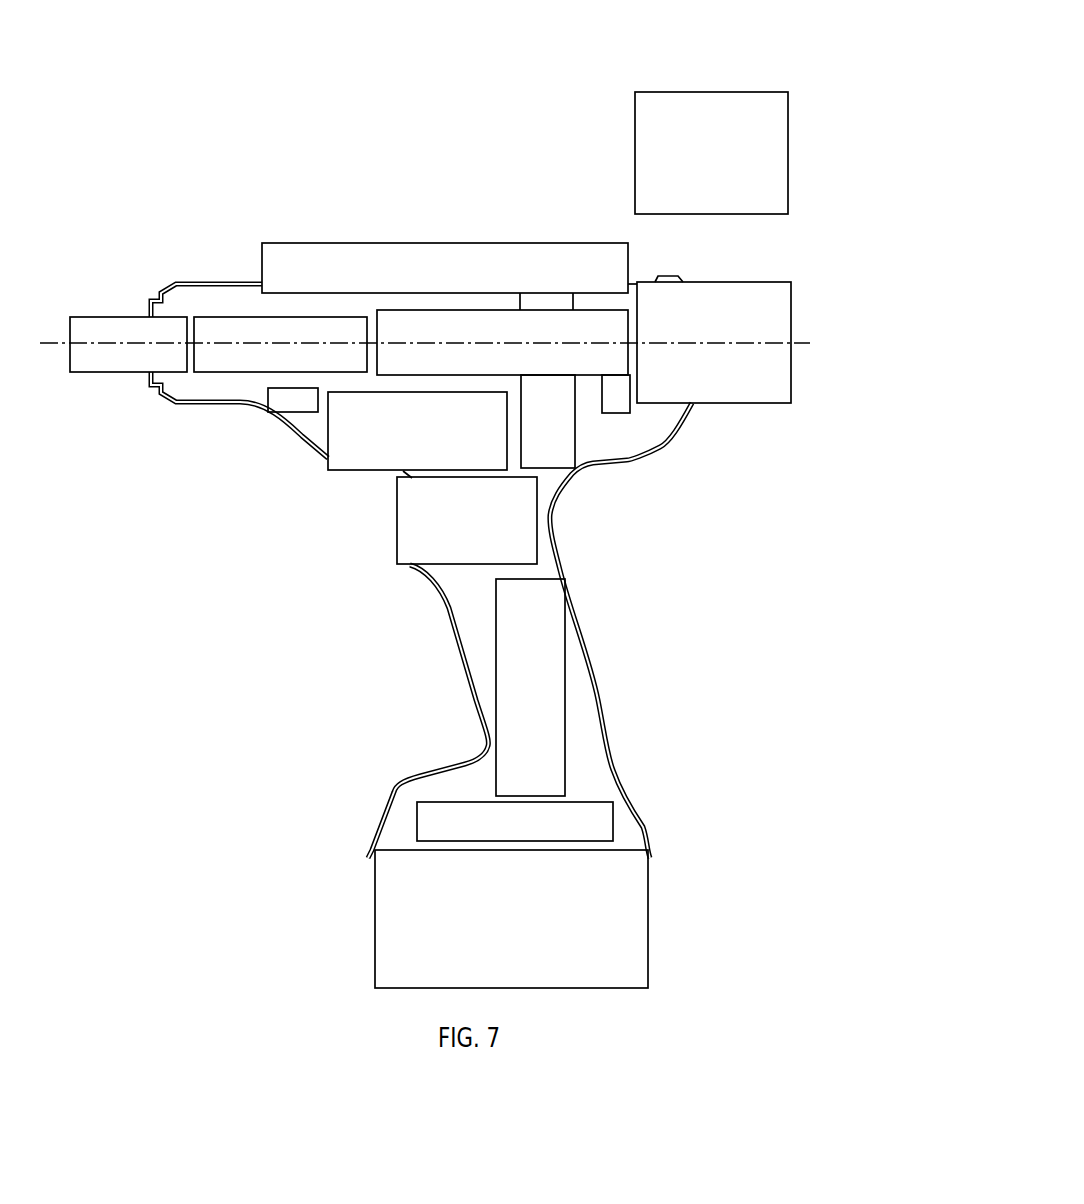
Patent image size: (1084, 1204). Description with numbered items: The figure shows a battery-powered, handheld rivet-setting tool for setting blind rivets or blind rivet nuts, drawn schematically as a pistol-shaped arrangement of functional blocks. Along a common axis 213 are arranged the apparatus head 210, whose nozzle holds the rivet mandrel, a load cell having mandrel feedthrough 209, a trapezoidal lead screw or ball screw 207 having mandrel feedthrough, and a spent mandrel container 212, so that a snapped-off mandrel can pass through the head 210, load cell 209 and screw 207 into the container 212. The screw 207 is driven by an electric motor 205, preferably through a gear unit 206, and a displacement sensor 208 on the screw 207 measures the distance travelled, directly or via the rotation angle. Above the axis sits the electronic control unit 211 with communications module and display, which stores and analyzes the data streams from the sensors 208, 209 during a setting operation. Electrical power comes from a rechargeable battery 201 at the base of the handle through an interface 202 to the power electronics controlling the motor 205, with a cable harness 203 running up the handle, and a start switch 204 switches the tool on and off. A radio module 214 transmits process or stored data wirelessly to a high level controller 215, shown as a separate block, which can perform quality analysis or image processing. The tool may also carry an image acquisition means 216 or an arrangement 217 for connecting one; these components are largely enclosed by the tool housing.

The rechargeable battery 201 is at (617, 928).
The interface between rechargeable battery and power electronics 202 is at (588, 820).
The cable harness 203 is at (548, 685).
The start switch 204 is at (408, 527).
The electric motor 205 is at (355, 458).
The gear unit 206 is at (552, 455).
The trapezoidal lead screw or ball screw 207 is at (450, 325).
The displacement sensor 208 is at (618, 405).
The load cell having mandrel feedthrough 209 is at (222, 327).
The apparatus head 210 is at (128, 327).
The electronic control unit 211 is at (536, 265).
The spent mandrel container 212 is at (752, 378).
The axis 213 is at (48, 343).
The radio module 214 is at (278, 402).
The high level controller 215 is at (708, 105).
The image acquisition means 216 is at (372, 571).
The arrangement for connection of an image acquisition means 217 is at (134, 389).